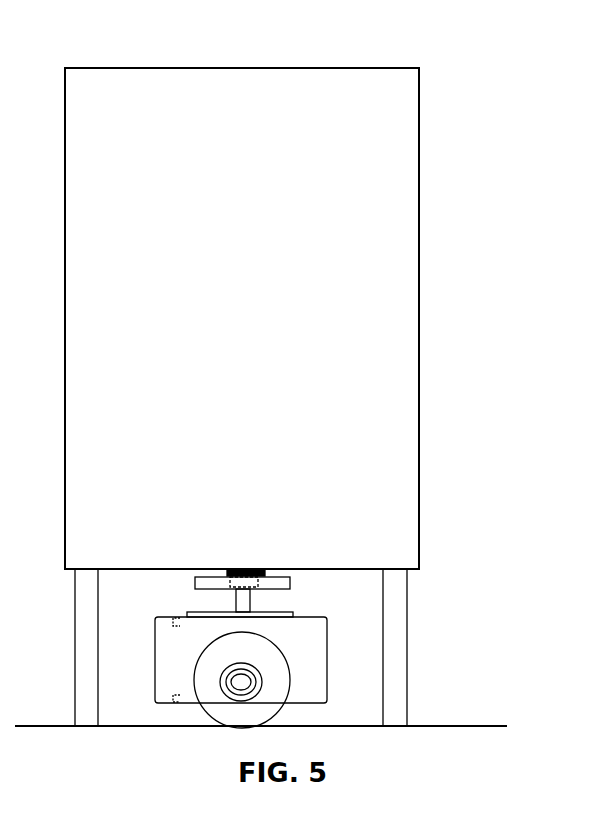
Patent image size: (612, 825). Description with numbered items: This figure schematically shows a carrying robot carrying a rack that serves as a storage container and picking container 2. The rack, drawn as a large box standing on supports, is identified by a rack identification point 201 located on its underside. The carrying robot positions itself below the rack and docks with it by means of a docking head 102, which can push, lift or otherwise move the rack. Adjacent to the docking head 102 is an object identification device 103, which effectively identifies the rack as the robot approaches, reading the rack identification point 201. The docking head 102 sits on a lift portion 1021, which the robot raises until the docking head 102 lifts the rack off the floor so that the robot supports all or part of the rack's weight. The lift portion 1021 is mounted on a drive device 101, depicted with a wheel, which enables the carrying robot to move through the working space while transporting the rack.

The storage container and picking container 2 is at (419, 68).
The rack identification point 201 is at (250, 567).
The object identification device 103 is at (252, 576).
The docking head 102 is at (277, 580).
The lift portion 1021 is at (245, 602).
The drive device 101 is at (268, 682).